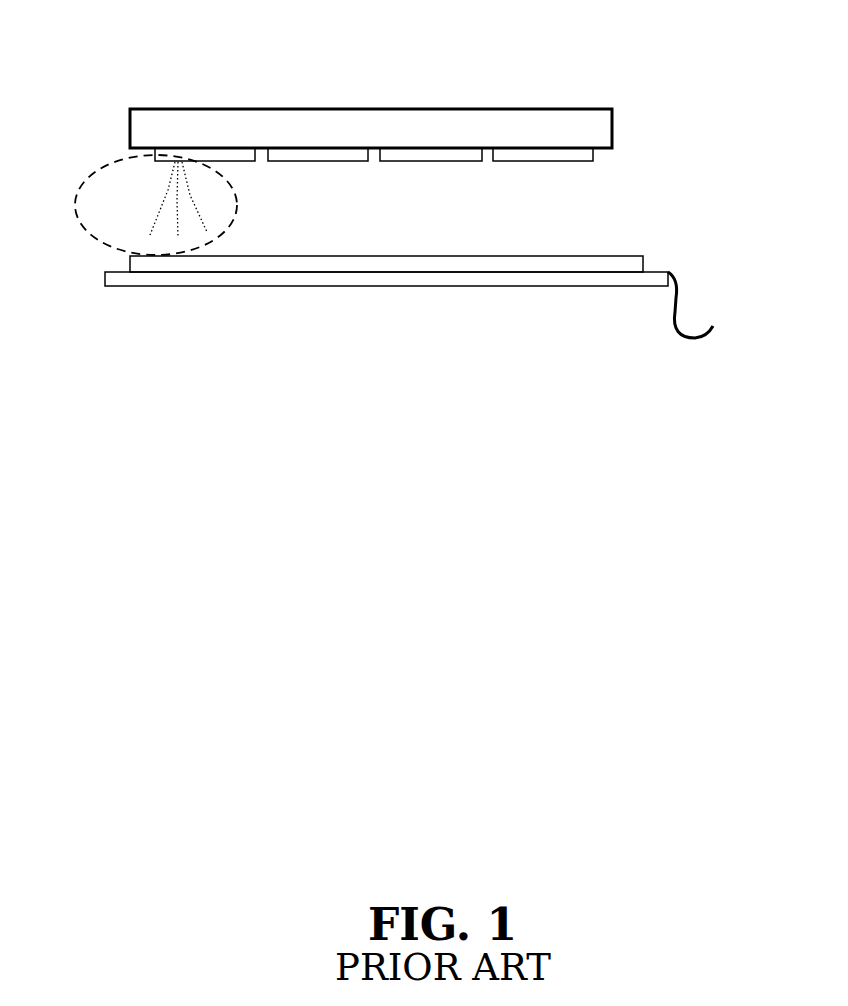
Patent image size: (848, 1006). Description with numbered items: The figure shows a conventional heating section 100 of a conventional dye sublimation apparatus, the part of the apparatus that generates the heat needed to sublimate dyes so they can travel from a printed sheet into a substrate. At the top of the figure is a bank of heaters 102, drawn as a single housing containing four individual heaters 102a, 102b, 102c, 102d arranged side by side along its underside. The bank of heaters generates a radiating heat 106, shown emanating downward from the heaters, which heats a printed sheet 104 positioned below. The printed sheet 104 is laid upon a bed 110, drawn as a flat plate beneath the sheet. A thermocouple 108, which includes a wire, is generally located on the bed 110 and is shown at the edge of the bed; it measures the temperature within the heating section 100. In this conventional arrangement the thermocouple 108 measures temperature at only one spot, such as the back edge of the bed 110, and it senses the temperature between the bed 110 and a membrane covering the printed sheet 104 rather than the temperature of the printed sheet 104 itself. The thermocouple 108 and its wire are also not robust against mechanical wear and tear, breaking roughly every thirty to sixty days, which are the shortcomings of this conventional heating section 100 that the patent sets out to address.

The heating section 100 is at (395, 446).
The bank of heaters 102 is at (483, 142).
The individual heater 102a is at (193, 157).
The individual heater 102b is at (280, 157).
The individual heater 102c is at (482, 157).
The individual heater 102d is at (555, 157).
The printed sheet 104 is at (505, 261).
The radiating heat 106 is at (107, 208).
The thermocouple 108 is at (707, 337).
The bed 110 is at (368, 286).